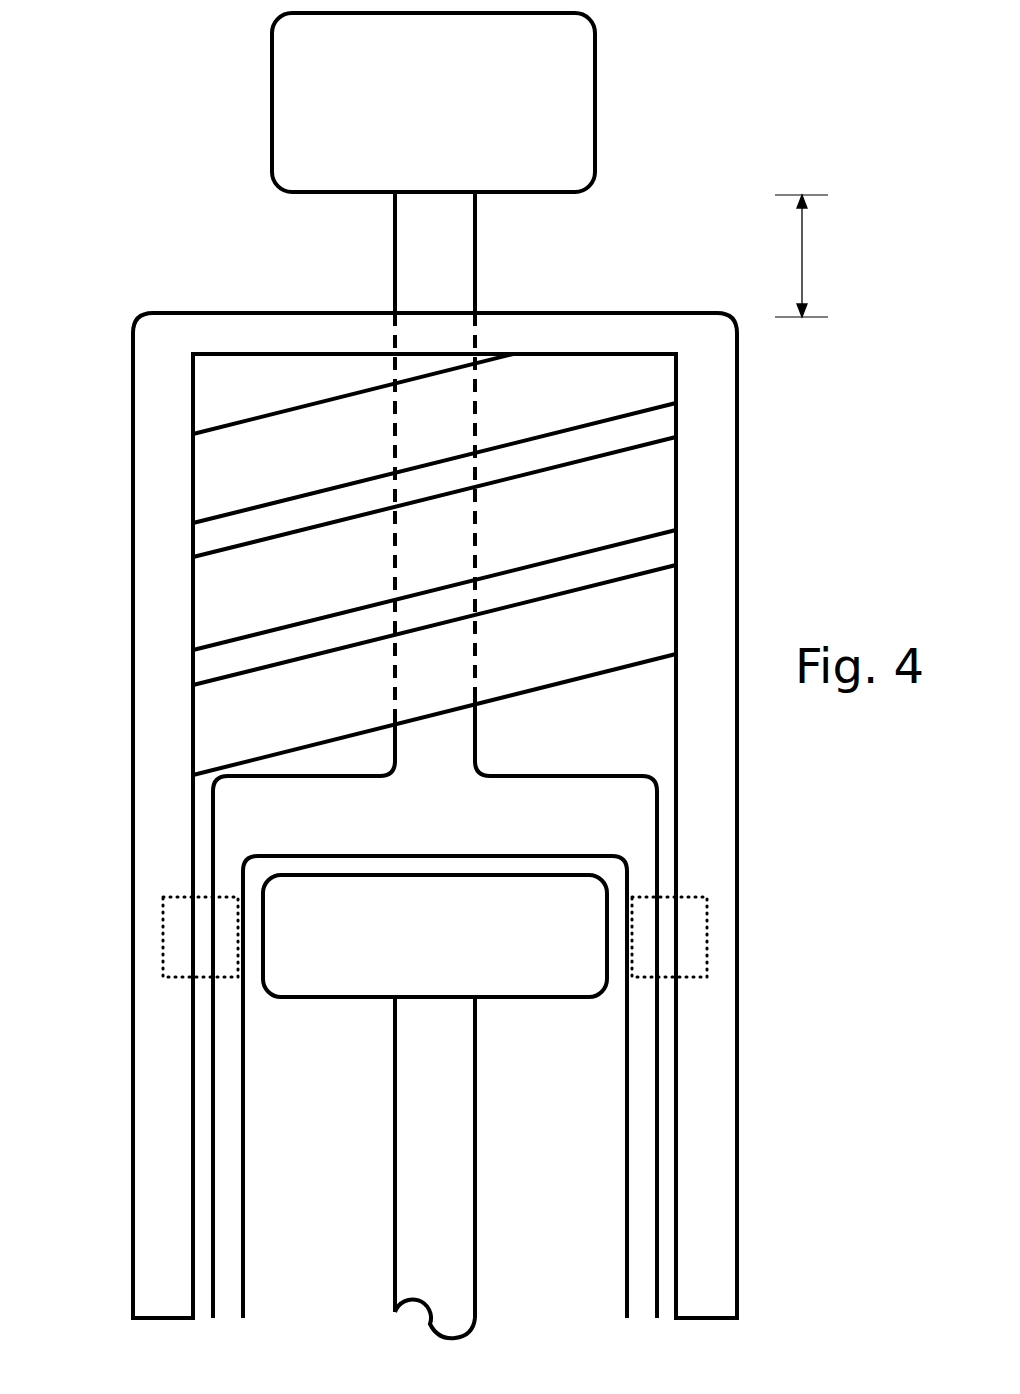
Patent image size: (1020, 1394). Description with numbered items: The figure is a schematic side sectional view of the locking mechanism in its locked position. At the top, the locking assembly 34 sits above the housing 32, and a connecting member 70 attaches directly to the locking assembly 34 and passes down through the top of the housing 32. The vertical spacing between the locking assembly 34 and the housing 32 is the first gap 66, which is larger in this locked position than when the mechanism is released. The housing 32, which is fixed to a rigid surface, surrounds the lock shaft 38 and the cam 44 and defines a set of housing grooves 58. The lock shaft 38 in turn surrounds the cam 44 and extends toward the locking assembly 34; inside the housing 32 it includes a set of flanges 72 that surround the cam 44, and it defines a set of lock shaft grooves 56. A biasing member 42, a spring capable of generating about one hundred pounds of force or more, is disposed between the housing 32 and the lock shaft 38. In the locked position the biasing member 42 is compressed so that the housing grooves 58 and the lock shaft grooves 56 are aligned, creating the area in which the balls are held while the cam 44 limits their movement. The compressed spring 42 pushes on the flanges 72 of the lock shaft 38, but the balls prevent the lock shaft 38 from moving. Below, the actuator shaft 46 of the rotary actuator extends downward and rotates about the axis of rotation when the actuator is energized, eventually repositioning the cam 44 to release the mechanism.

The housing 32 is at (148, 685).
The locking assembly 34 is at (433, 102).
The lock shaft 38 is at (435, 1009).
The biasing member 42 is at (217, 485).
The cam 44 is at (435, 936).
The actuator shaft 46 is at (435, 1167).
The lock shaft grooves 56 is at (638, 967).
The housing grooves 58 is at (693, 949).
The first gap 66 is at (801, 256).
The connecting member 70 is at (453, 253).
The flanges 72 is at (615, 816).